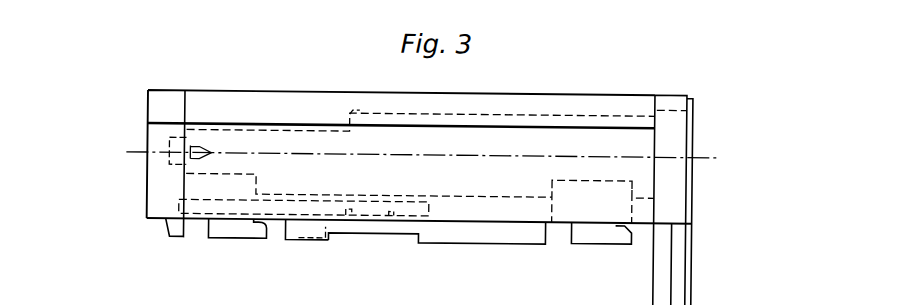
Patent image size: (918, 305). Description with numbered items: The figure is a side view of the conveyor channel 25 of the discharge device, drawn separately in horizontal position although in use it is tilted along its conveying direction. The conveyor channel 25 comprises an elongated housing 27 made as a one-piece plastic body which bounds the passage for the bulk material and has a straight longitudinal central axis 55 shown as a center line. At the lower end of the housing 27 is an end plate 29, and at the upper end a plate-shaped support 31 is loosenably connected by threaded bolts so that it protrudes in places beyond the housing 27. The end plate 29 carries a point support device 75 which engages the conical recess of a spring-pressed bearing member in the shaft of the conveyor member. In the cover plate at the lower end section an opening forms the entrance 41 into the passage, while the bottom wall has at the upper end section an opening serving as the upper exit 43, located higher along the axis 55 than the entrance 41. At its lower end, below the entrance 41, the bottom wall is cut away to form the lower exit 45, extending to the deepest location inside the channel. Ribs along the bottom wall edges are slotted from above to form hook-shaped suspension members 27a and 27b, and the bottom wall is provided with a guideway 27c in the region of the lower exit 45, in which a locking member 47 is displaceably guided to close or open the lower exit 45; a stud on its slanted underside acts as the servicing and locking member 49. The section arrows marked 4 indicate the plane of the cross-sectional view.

The section line 4 is at (622, 102).
The conveyor channel 25 is at (267, 86).
The housing 27 is at (397, 93).
The hook-shaped suspension member 27a is at (629, 240).
The hook-shaped suspension member 27b is at (263, 238).
The guideway 27c is at (390, 222).
The end plate 29 is at (148, 97).
The support 31 is at (697, 102).
The entrance 41 is at (350, 111).
The upper exit 43 is at (574, 178).
The lower exit 45 is at (241, 199).
The locking member 47 is at (356, 206).
The servicing and locking member 49 is at (293, 246).
The longitudinal central axis 55 is at (704, 152).
The point support device 75 is at (207, 128).